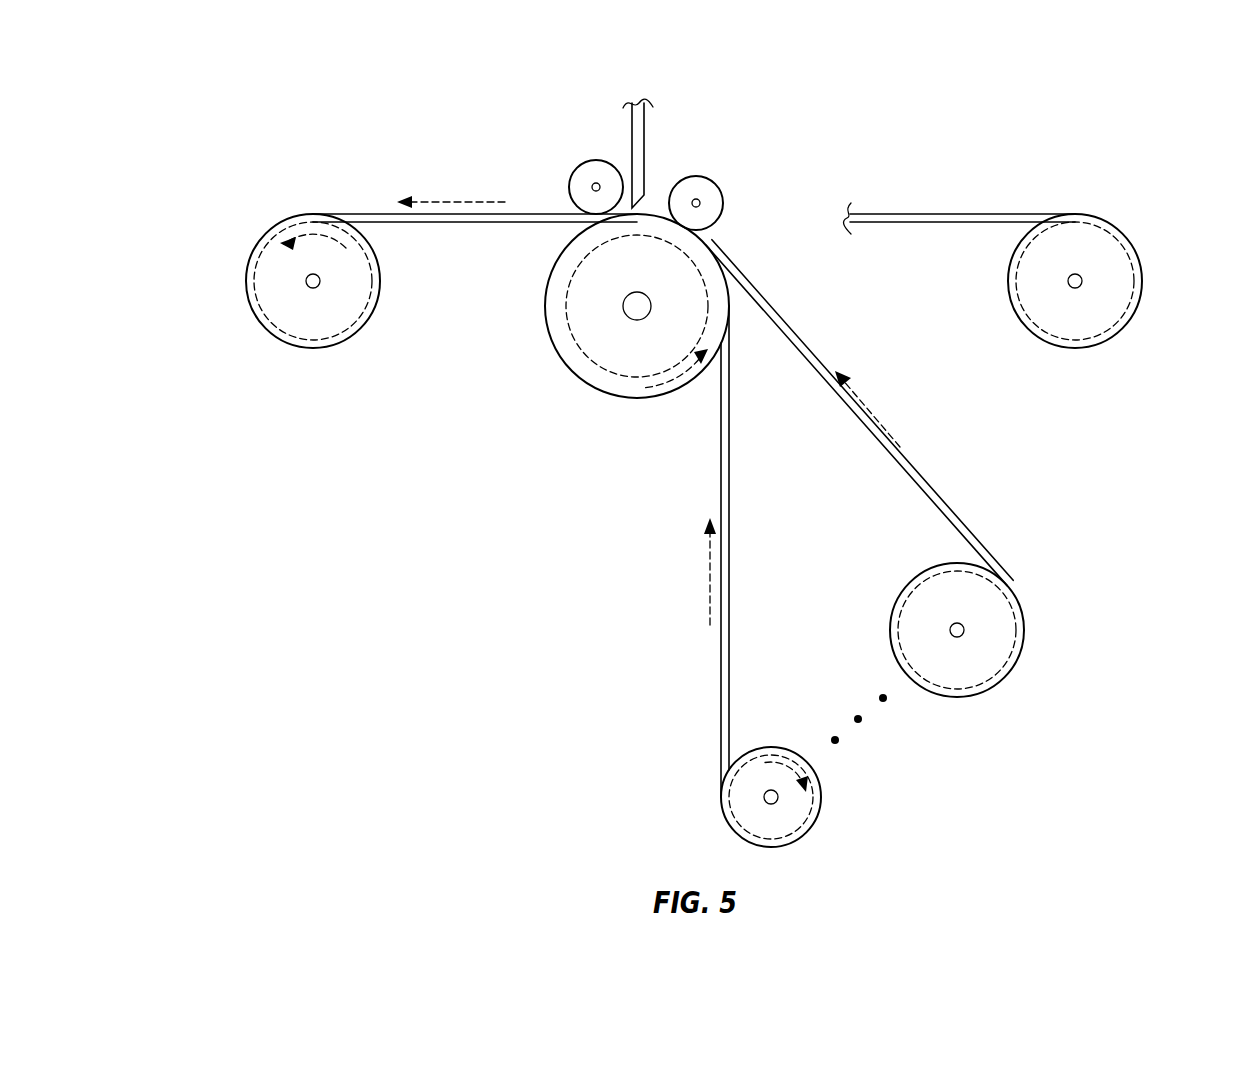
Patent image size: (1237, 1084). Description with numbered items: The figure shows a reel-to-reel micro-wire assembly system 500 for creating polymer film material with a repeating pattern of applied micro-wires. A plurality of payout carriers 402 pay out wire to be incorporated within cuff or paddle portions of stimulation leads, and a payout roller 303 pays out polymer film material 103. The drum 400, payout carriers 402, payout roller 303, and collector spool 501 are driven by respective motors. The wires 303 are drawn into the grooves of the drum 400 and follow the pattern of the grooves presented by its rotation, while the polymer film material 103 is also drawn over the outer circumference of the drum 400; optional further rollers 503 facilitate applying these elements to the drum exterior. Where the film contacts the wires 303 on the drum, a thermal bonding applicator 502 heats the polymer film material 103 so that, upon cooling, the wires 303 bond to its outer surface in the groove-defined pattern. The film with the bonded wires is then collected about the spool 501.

The reel-to-reel micro-wire assembly system 500 is at (1130, 136).
The collector spool 501 is at (247, 281).
The thermal bonding applicator 502 is at (632, 135).
The further rollers 503 is at (570, 187).
The drum 400 is at (545, 306).
The polymer film material 103 is at (963, 214).
The wires / payout roller 303 is at (1143, 281).
The payout carriers 402 is at (1025, 628).